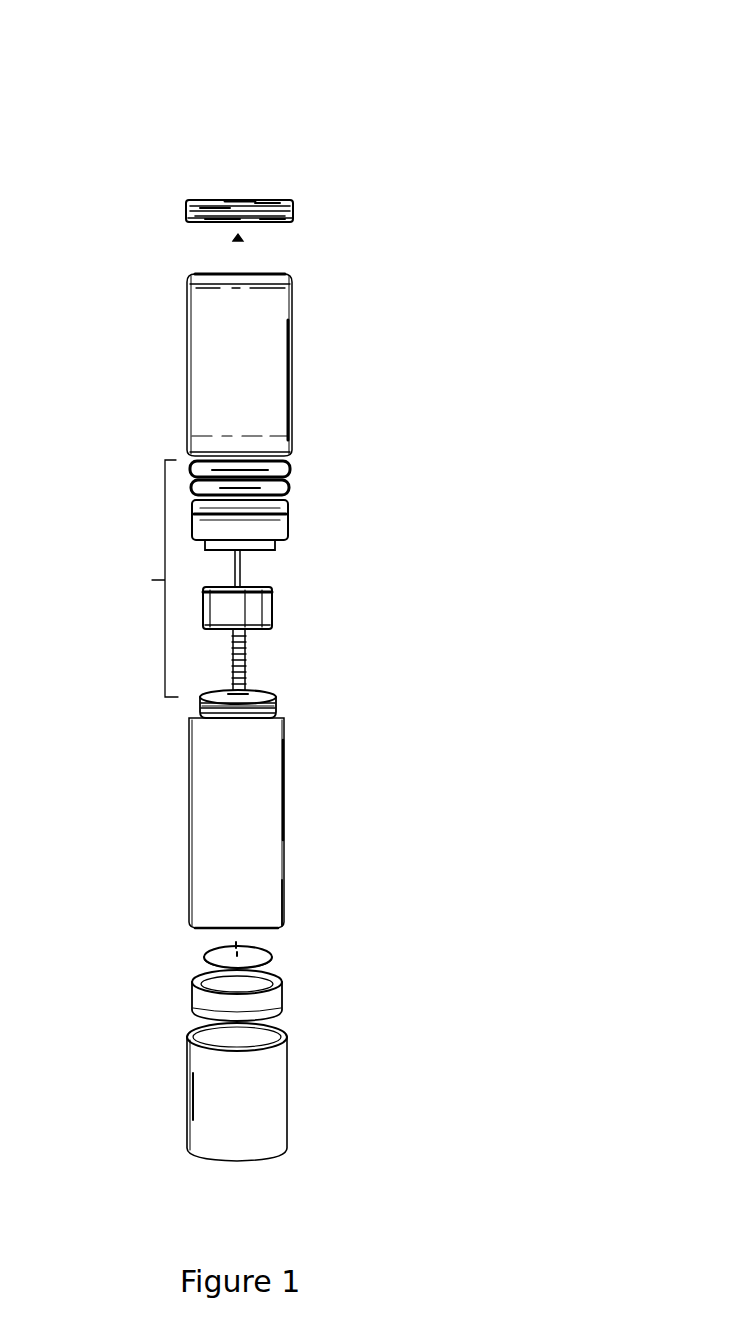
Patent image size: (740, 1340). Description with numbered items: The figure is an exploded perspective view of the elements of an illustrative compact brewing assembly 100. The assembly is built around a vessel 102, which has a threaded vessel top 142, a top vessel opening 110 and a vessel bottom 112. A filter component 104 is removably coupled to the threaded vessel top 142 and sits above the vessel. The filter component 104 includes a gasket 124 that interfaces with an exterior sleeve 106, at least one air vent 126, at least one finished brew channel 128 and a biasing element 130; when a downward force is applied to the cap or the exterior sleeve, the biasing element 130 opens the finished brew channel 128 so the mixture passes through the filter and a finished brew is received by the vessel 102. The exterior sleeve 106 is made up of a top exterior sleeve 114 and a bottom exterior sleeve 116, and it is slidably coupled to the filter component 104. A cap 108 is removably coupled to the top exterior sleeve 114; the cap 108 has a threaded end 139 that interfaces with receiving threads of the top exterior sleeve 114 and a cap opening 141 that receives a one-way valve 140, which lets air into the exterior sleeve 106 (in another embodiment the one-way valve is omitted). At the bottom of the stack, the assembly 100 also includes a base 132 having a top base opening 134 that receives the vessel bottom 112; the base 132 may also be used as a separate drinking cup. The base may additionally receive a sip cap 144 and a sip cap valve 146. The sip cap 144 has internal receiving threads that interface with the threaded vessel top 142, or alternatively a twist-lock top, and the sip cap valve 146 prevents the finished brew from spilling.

The compact brewing assembly 100 is at (244, 112).
The vessel 102 is at (190, 815).
The filter component 104 is at (141, 578).
The exterior sleeve 106 is at (293, 365).
The cap 108 is at (205, 200).
The top vessel opening 110 is at (270, 694).
The vessel bottom 112 is at (283, 895).
The top exterior sleeve 114 is at (293, 290).
The bottom exterior sleeve 116 is at (293, 432).
The gasket 124 is at (288, 472).
The air vent 126 is at (280, 547).
The finished brew channel 128 is at (236, 605).
The biasing element 130 is at (243, 660).
The base 132 is at (188, 1085).
The top base opening 134 is at (288, 1030).
The threaded end 139 is at (196, 222).
The one-way valve 140 is at (243, 240).
The cap opening 141 is at (240, 200).
The threaded vessel top 142 is at (215, 714).
The sip cap 144 is at (282, 985).
The sip cap valve 146 is at (270, 950).